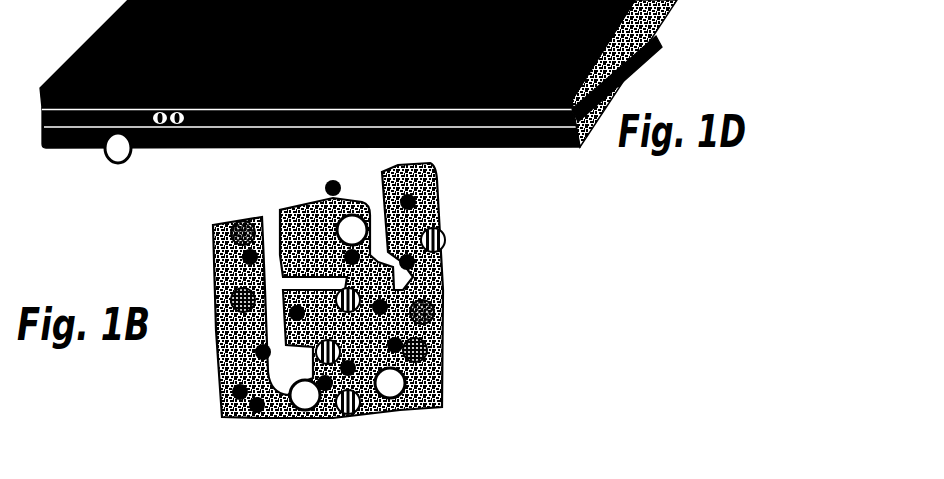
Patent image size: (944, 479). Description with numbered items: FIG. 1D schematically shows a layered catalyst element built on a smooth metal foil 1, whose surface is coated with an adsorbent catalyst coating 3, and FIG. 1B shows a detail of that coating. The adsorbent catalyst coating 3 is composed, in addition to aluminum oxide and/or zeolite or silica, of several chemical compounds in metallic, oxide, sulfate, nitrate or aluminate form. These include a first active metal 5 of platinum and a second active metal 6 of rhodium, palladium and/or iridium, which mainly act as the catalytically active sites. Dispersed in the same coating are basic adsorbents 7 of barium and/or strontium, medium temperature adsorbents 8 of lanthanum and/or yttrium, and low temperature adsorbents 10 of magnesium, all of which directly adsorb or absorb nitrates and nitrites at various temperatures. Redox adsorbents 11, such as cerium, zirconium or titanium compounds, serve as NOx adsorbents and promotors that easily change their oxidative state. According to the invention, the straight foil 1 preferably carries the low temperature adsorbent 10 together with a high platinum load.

In FIG. 1D, the smooth metal foil 1 is at (658, 38).
In FIG. 1D, the adsorbent catalyst coating 3 is at (547, 137).
In FIG. 1B, the first active metal 5 is at (437, 207).
In FIG. 1B, the second active metal 6 is at (220, 392).
In FIG. 1B, the basic adsorbents 7 is at (440, 349).
In FIG. 1B, the medium temperature adsorbents 8 is at (440, 308).
In FIG. 1B, the low temperature adsorbents 10 is at (445, 242).
In FIG. 1B, the redox adsorbents 11 is at (440, 385).